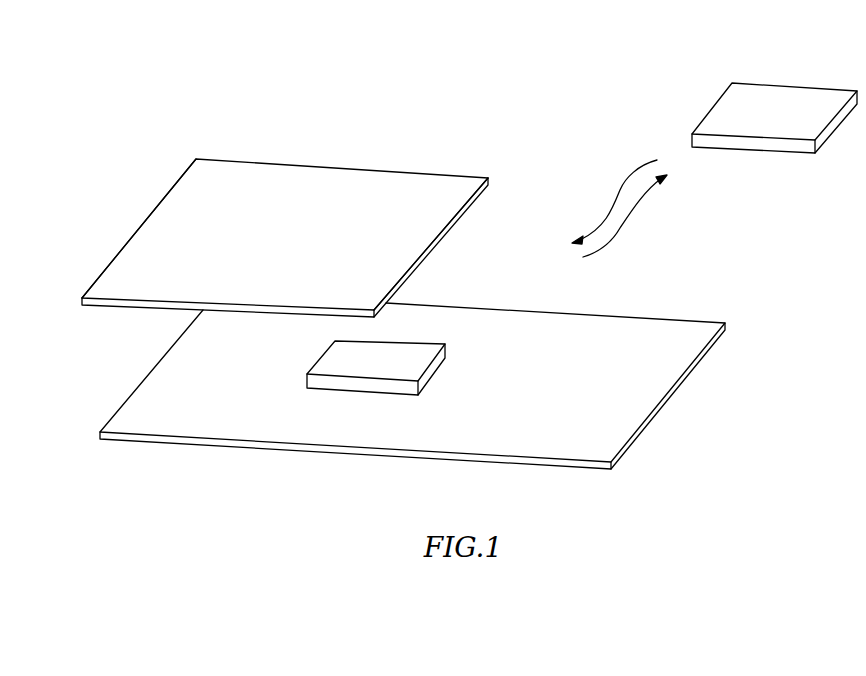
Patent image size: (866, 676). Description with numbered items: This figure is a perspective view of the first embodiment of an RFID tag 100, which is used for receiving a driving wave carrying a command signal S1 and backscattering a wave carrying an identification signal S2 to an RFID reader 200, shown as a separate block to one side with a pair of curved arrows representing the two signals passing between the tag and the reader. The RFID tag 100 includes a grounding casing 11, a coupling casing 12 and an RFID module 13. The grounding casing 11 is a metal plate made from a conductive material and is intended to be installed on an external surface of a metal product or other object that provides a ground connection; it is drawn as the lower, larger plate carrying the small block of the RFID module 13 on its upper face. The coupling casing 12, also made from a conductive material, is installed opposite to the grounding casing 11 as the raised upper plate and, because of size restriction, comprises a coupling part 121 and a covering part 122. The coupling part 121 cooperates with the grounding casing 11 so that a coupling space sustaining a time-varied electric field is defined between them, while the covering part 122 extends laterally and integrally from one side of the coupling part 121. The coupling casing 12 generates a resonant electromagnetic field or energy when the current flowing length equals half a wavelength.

The RFID tag 100 is at (149, 157).
The grounding casing 11 is at (440, 460).
The coupling casing 12 is at (331, 160).
The coupling part 121 is at (434, 210).
The covering part 122 is at (218, 198).
The RFID module 13 is at (360, 385).
The RFID reader 200 is at (792, 101).
The command signal S1 is at (614, 202).
The identification signal S2 is at (625, 216).